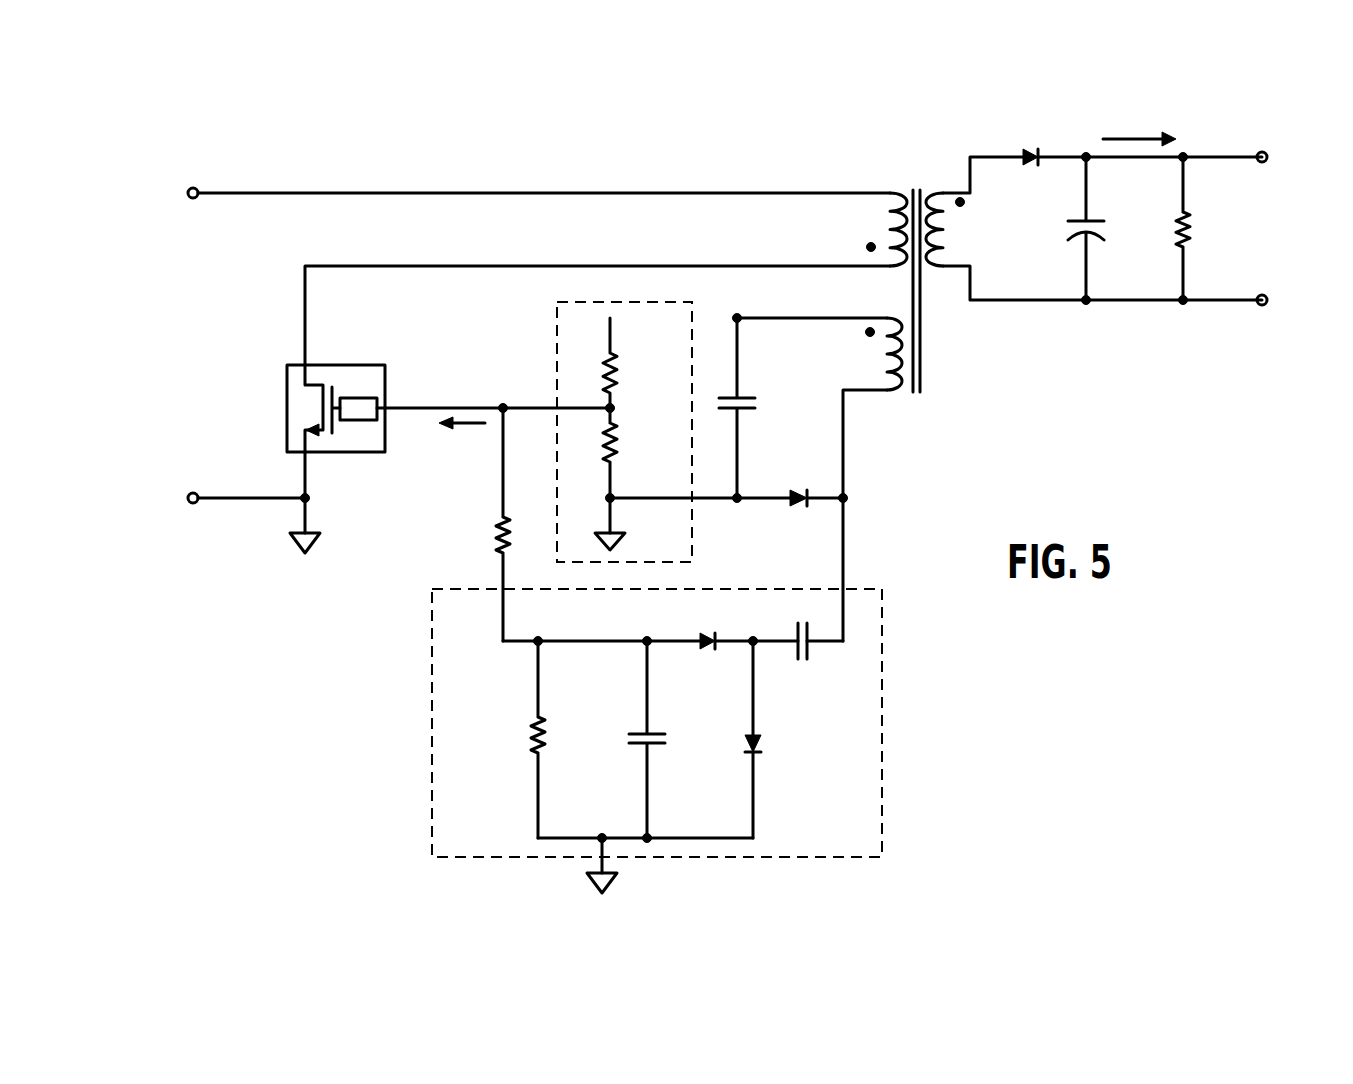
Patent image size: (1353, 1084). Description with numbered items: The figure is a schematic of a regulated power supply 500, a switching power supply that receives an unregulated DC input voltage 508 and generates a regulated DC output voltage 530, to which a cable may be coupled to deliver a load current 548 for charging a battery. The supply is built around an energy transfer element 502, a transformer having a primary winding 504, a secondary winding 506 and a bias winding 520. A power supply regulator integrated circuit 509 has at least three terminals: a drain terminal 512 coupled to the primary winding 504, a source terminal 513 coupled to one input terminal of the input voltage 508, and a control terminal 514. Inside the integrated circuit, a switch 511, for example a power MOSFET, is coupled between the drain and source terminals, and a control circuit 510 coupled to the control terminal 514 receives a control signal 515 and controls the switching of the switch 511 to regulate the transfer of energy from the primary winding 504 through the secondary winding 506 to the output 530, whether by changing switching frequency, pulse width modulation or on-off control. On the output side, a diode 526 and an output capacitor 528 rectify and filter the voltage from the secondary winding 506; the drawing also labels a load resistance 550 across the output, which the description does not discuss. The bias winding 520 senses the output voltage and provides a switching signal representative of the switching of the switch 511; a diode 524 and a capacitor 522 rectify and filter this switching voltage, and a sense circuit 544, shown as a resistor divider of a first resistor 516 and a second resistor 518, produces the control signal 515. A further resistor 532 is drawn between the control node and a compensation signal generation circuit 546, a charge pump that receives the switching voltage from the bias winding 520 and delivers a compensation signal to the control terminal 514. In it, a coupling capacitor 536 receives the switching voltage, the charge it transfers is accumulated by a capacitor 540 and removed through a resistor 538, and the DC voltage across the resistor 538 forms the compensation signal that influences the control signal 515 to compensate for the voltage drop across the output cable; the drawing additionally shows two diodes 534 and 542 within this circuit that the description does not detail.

The regulated power supply 500 is at (282, 109).
The energy transfer element 502 is at (915, 182).
The primary winding 504 is at (880, 218).
The secondary winding 506 is at (952, 230).
The unregulated DC input VIN 508 is at (180, 300).
The power supply regulator integrated circuit 509 is at (340, 362).
The control circuit 510 is at (360, 418).
The switch 511 is at (302, 402).
The drain terminal D 512 is at (275, 322).
The source terminal S 513 is at (280, 466).
The control terminal C 514 is at (402, 433).
The control signal 515 is at (455, 402).
The resistor R1 516 is at (625, 368).
The resistor R2 518 is at (625, 437).
The bias winding 520 is at (875, 352).
The capacitor CB 522 is at (755, 420).
The diode D3 524 is at (800, 512).
The diode D4 526 is at (1030, 143).
The capacitor Co 528 is at (1100, 210).
The regulated DC output voltage VOUT 530 is at (1272, 212).
The resistor R3 532 is at (490, 535).
The diode D2 534 is at (692, 632).
The capacitor CT 536 is at (818, 650).
The resistor RA 538 is at (550, 757).
The capacitor CA 540 is at (655, 757).
The diode D1 542 is at (770, 760).
The sense circuit 544 is at (548, 338).
The compensation signal generation circuit 546 is at (428, 697).
The load current ILOAD 548 is at (1160, 122).
The load resistor RO 550 is at (1170, 253).